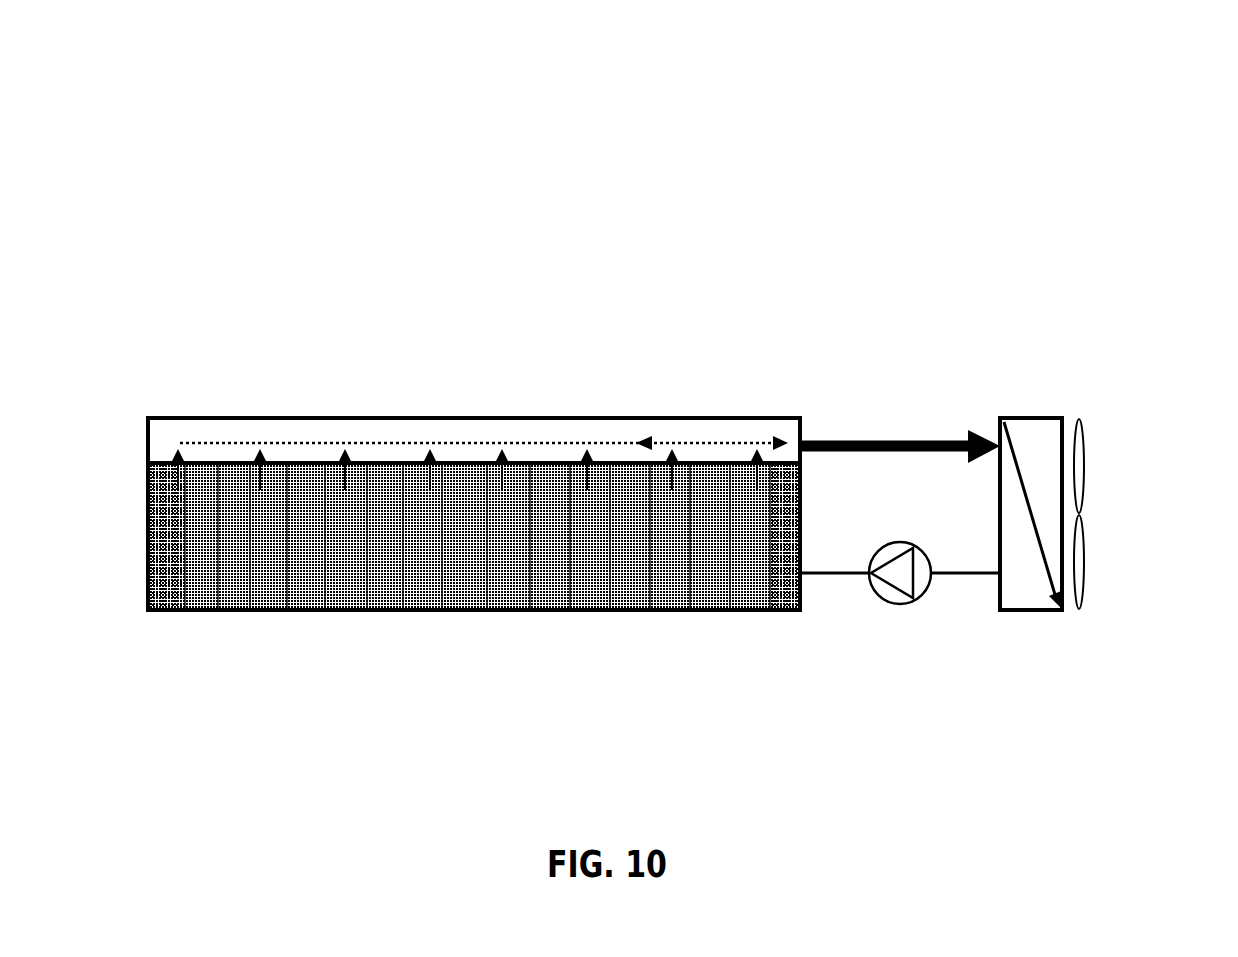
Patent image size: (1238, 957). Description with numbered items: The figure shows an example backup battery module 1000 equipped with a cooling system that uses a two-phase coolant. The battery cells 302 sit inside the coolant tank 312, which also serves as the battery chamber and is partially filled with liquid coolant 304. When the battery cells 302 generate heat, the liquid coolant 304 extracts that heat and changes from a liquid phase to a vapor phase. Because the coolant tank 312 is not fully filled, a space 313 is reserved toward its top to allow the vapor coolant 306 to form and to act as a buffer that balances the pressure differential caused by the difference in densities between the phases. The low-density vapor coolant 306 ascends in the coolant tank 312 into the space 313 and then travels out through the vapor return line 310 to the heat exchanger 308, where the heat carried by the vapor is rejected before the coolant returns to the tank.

The backup battery module 1000 is at (912, 71).
The battery cells 302 is at (430, 540).
The liquid coolant 304 is at (165, 568).
The vapor coolant 306 is at (678, 446).
The heat exchanger 308 is at (1052, 430).
The vapor return line 310 is at (912, 448).
The coolant tank 312 is at (572, 608).
The space 313 is at (195, 433).